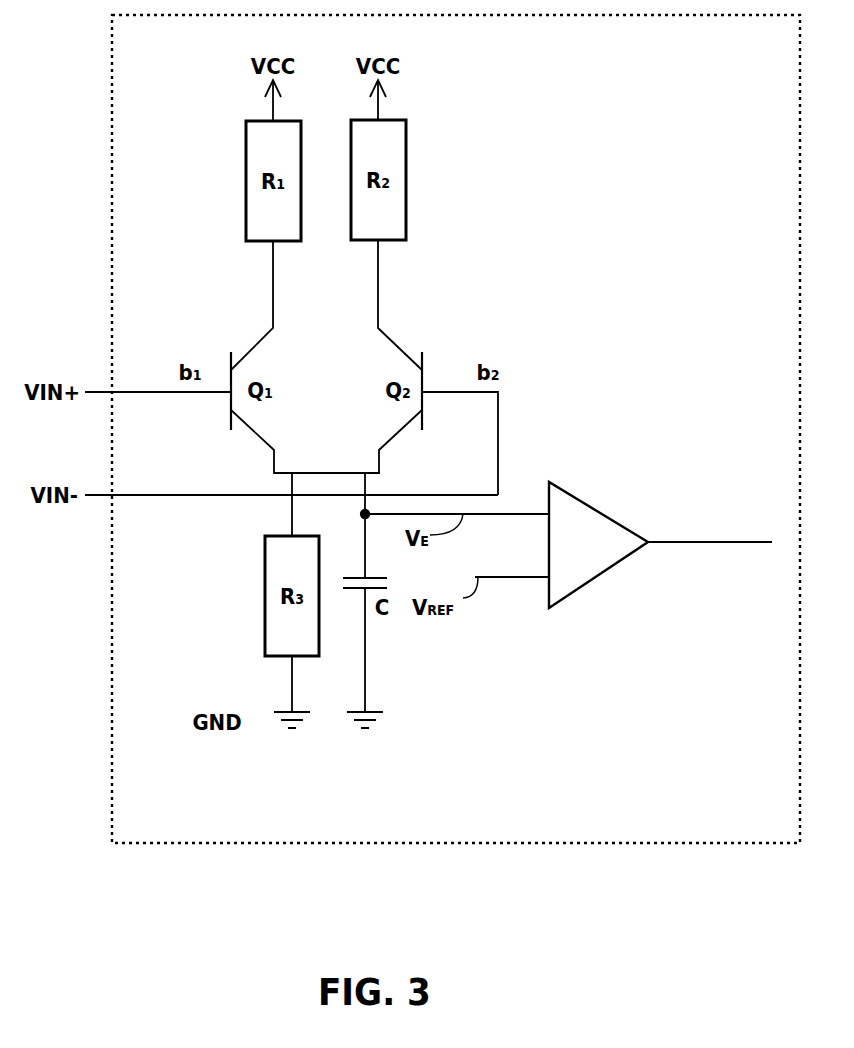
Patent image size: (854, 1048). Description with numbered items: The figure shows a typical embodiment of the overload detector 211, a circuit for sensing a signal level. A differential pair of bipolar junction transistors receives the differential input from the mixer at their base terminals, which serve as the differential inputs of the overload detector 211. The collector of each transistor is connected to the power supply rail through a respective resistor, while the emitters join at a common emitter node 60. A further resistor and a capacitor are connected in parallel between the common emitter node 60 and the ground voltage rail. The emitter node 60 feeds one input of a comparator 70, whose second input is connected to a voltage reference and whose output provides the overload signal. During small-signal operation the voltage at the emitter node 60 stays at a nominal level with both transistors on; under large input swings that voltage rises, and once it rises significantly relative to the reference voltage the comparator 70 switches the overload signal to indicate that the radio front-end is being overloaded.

The common emitter node 60 is at (333, 473).
The comparator 70 is at (595, 575).
The overload detector 211 is at (440, 831).